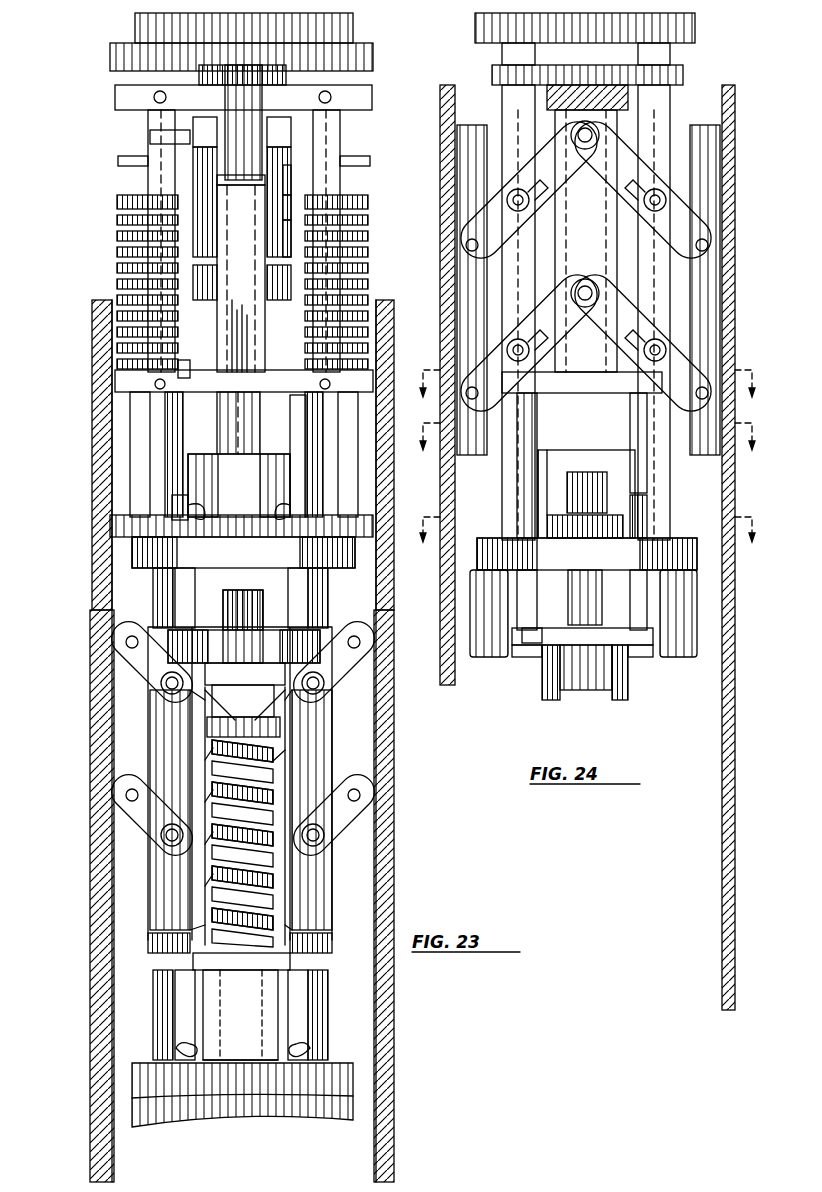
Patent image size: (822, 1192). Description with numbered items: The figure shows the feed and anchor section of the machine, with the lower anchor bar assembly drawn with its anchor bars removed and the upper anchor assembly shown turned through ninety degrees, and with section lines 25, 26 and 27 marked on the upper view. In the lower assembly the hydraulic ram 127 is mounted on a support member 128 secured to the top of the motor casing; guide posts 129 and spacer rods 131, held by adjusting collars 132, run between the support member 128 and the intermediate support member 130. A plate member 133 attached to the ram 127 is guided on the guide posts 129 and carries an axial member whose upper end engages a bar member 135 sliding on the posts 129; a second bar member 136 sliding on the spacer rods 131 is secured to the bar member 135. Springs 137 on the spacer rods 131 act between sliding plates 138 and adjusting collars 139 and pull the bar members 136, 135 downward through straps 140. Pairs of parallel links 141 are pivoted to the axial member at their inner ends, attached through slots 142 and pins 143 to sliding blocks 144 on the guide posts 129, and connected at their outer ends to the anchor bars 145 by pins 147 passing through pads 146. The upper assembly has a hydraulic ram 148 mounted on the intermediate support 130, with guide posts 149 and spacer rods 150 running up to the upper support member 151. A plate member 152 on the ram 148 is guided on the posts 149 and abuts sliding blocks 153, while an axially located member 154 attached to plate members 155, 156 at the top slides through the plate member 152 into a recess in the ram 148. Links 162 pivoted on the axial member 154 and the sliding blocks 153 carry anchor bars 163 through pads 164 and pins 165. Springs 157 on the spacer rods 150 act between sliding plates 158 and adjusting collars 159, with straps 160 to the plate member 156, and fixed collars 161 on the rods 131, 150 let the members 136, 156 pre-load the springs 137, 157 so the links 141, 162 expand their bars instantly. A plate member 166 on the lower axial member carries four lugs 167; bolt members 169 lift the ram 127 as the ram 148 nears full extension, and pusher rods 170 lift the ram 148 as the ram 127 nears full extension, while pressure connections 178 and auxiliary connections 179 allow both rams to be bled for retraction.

In FIG. 23, the hydraulic ram 127 is at (278, 1016).
In FIG. 23, the support member 128 is at (355, 1085).
In FIG. 23, the guide posts 129 is at (165, 583).
In FIG. 24, the guide posts 129 is at (602, 598).
In FIG. 23, the intermediate support member 130 is at (241, 541).
In FIG. 24, the intermediate support member 130 is at (587, 554).
In FIG. 23, the spacer rods 131 is at (240, 1006).
In FIG. 24, the spacer rods 131 is at (486, 596).
In FIG. 23, the adjusting collars 132 is at (226, 1052).
In FIG. 24, the adjusting collars 132 is at (465, 584).
In FIG. 23, the plate member 133 is at (285, 920).
In FIG. 23, the bar member 135 is at (212, 655).
In FIG. 24, the bar member 135 is at (604, 690).
In FIG. 23, the bar member 136 is at (212, 673).
In FIG. 23, the springs 137 is at (270, 783).
In FIG. 23, the sliding plates 138 is at (270, 966).
In FIG. 23, the adjusting collars 139 is at (266, 724).
In FIG. 23, the straps 140 is at (205, 867).
In FIG. 23, the parallel links 141 is at (128, 645).
In FIG. 24, the parallel links 141 is at (618, 664).
In FIG. 23, the slots 142 is at (242, 716).
In FIG. 23, the pins 143 is at (320, 690).
In FIG. 23, the sliding blocks 144 is at (165, 742).
In FIG. 23, the anchor bars 145 is at (105, 716).
In FIG. 23, the pads 146 is at (300, 745).
In FIG. 23, the pins 147 is at (290, 822).
In FIG. 23, the hydraulic ram 148 is at (210, 473).
In FIG. 24, the hydraulic ram 148 is at (556, 484).
In FIG. 23, the guide posts 149 is at (240, 425).
In FIG. 24, the guide posts 149 is at (652, 465).
In FIG. 23, the spacer rods 150 is at (345, 130).
In FIG. 23, the upper support member 151 is at (345, 25).
In FIG. 24, the upper support member 151 is at (585, 39).
In FIG. 23, the plate member 152 is at (190, 378).
In FIG. 24, the plate member 152 is at (585, 378).
In FIG. 23, the sliding blocks 153 is at (235, 228).
In FIG. 24, the sliding blocks 153 is at (655, 280).
In FIG. 23, the axially located member 154 is at (262, 153).
In FIG. 24, the axially located member 154 is at (612, 122).
In FIG. 23, the plate member 155 is at (275, 78).
In FIG. 24, the plate member 155 is at (672, 76).
In FIG. 23, the plate member 156 is at (355, 97).
In FIG. 24, the plate member 156 is at (618, 96).
In FIG. 23, the springs 157 is at (120, 270).
In FIG. 23, the sliding plates 158 is at (125, 385).
In FIG. 23, the adjusting collars 159 is at (128, 203).
In FIG. 23, the straps 160 is at (152, 137).
In FIG. 23, the fixed collars 161 is at (122, 163).
In FIG. 23, the links 162 is at (272, 175).
In FIG. 24, the links 162 is at (695, 225).
In FIG. 23, the anchor bars 163 is at (352, 215).
In FIG. 24, the anchor bars 163 is at (715, 197).
In FIG. 23, the pads 164 is at (352, 190).
In FIG. 24, the pads 164 is at (705, 160).
In FIG. 23, the pins 165 is at (352, 247).
In FIG. 24, the pins 165 is at (706, 246).
In FIG. 23, the plate member 166 is at (208, 635).
In FIG. 24, the plate member 166 is at (565, 632).
In FIG. 24, the lugs 167 is at (528, 640).
In FIG. 23, the bolt members 169 is at (305, 495).
In FIG. 24, the bolt members 169 is at (525, 463).
In FIG. 23, the pusher rods 170 is at (180, 505).
In FIG. 24, the pusher rods 170 is at (640, 504).
In FIG. 23, the pressure connections 178 is at (160, 1047).
In FIG. 23, the auxiliary connections 179 is at (302, 1050).
In FIG. 24, the section line 25 is at (592, 456).
In FIG. 24, the section line 26 is at (592, 544).
In FIG. 24, the section line 27 is at (592, 395).